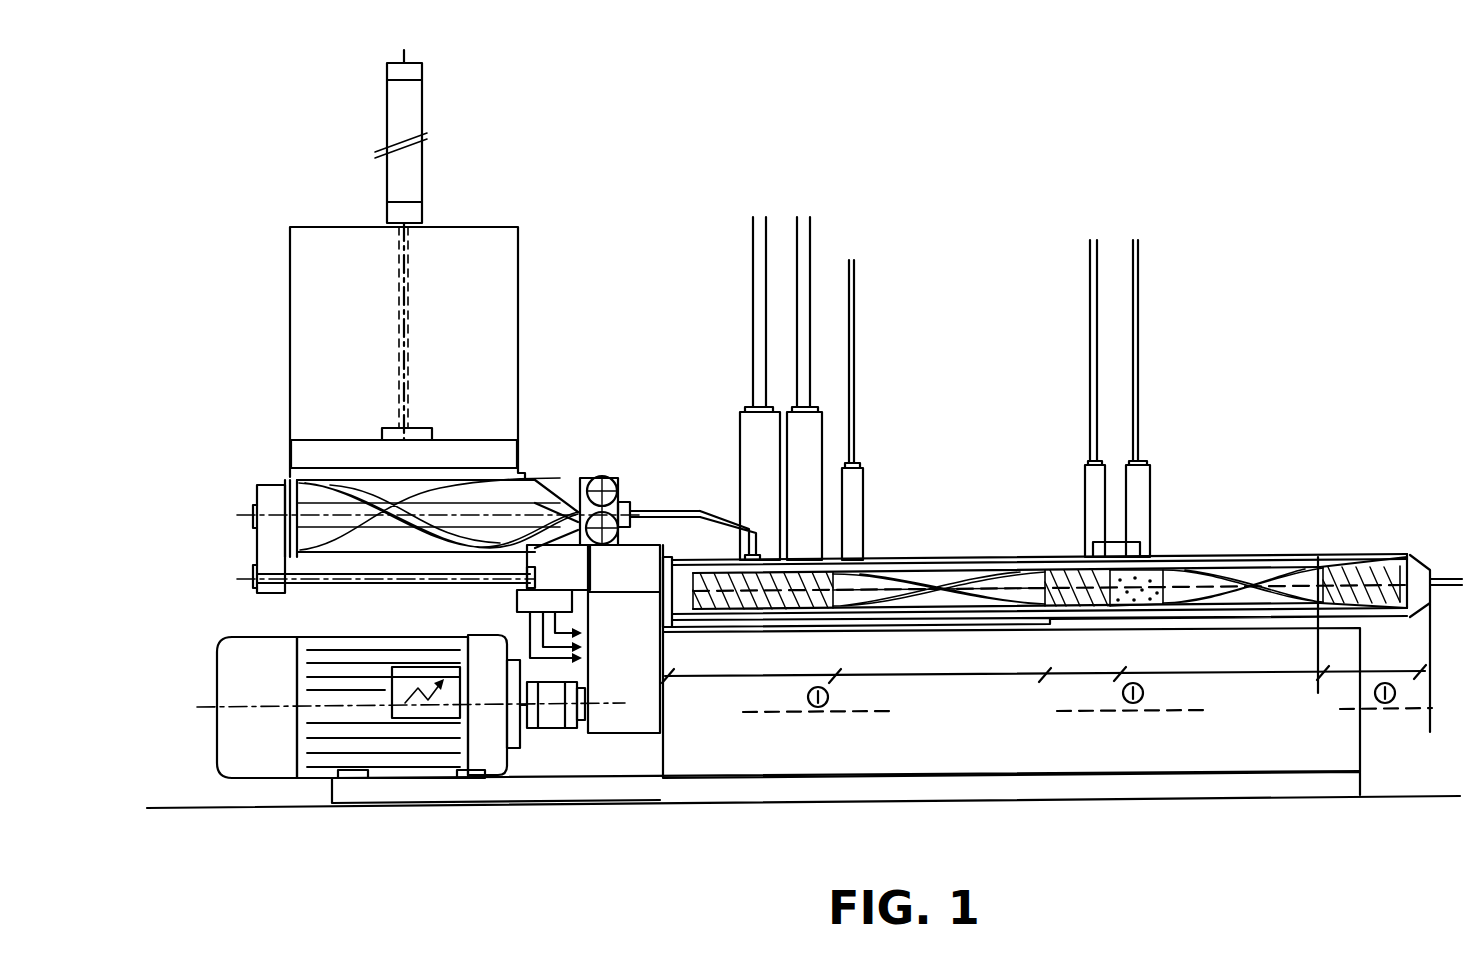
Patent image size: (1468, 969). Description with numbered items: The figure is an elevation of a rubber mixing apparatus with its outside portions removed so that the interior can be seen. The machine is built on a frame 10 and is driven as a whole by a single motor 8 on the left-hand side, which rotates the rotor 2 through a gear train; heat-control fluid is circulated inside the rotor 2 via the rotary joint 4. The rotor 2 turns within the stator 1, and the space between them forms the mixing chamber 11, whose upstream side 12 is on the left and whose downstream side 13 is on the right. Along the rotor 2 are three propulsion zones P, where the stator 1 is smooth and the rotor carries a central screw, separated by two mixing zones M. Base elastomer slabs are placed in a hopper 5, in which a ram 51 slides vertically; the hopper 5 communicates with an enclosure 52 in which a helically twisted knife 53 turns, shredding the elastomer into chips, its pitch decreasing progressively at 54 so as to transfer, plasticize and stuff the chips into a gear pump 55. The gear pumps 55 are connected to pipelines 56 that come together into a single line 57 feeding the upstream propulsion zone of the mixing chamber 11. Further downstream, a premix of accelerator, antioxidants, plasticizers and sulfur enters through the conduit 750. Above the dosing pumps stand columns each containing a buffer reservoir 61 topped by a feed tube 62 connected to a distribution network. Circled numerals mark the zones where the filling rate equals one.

The stator 1 is at (733, 567).
The rotor 2 is at (988, 583).
The rotary joint 4 is at (537, 596).
The hopper 5 is at (262, 270).
The motor 8 is at (253, 667).
The frame 10 is at (442, 797).
The mixing chamber 11 is at (788, 624).
The upstream side 12 is at (729, 725).
The downstream side 13 is at (1418, 742).
The ram 51 is at (320, 455).
The enclosure 52 is at (310, 545).
The helically twisted knife 53 is at (322, 497).
The region of decreasing helix pitch 54 is at (578, 495).
The gear pump 55 is at (594, 484).
The pipeline 56 is at (660, 511).
The single line 57 is at (768, 543).
The buffer reservoir 61 is at (757, 437).
The feed tube 62 is at (753, 232).
The conduit 750 is at (1117, 540).